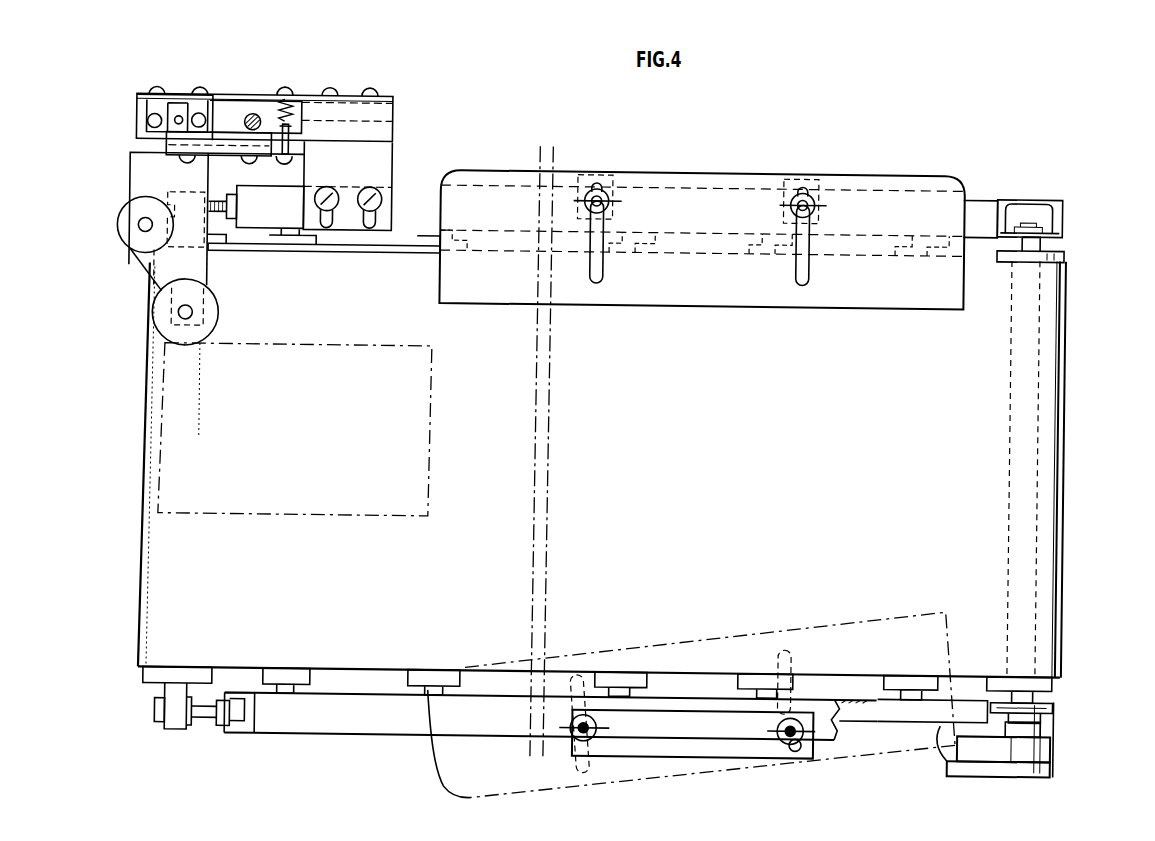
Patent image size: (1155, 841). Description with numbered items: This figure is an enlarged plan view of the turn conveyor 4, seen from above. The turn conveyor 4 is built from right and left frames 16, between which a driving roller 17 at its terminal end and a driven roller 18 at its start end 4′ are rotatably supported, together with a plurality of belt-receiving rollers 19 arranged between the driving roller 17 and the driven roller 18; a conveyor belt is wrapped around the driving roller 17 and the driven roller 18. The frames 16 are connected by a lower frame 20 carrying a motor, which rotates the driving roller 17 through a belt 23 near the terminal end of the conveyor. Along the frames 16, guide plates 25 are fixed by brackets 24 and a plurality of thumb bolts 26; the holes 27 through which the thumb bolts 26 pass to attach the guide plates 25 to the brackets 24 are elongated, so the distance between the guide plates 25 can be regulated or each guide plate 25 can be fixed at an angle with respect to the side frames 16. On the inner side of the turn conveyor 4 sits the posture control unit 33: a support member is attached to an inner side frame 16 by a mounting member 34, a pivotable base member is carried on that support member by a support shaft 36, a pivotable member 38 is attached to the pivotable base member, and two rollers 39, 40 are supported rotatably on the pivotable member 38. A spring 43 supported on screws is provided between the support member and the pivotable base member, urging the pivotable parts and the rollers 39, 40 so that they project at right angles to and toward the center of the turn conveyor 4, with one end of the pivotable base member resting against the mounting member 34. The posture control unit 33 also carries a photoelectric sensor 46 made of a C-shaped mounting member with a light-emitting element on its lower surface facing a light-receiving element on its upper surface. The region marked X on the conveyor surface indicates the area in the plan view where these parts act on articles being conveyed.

The turn conveyor 4 is at (1043, 158).
The start end 4′ is at (143, 477).
The frames 16 is at (980, 205).
The driving roller 17 is at (1063, 251).
The driven roller 18 is at (143, 678).
The belt-receiving rollers 19 is at (295, 722).
The lower bar 20 is at (363, 673).
The belt 23 is at (980, 749).
The brackets 24 is at (828, 183).
The guide plates 25 is at (682, 293).
The thumb bolts 26 is at (610, 190).
The holes 27 is at (585, 287).
The posture control unit 33 is at (127, 272).
The mounting member 34 is at (341, 116).
The support shaft 36 is at (251, 115).
The pivotable member 38 is at (133, 172).
The roller 39 is at (163, 322).
The roller 40 is at (115, 224).
The spring 43 is at (284, 108).
The sensor 46 is at (151, 113).
The window region X is at (290, 499).